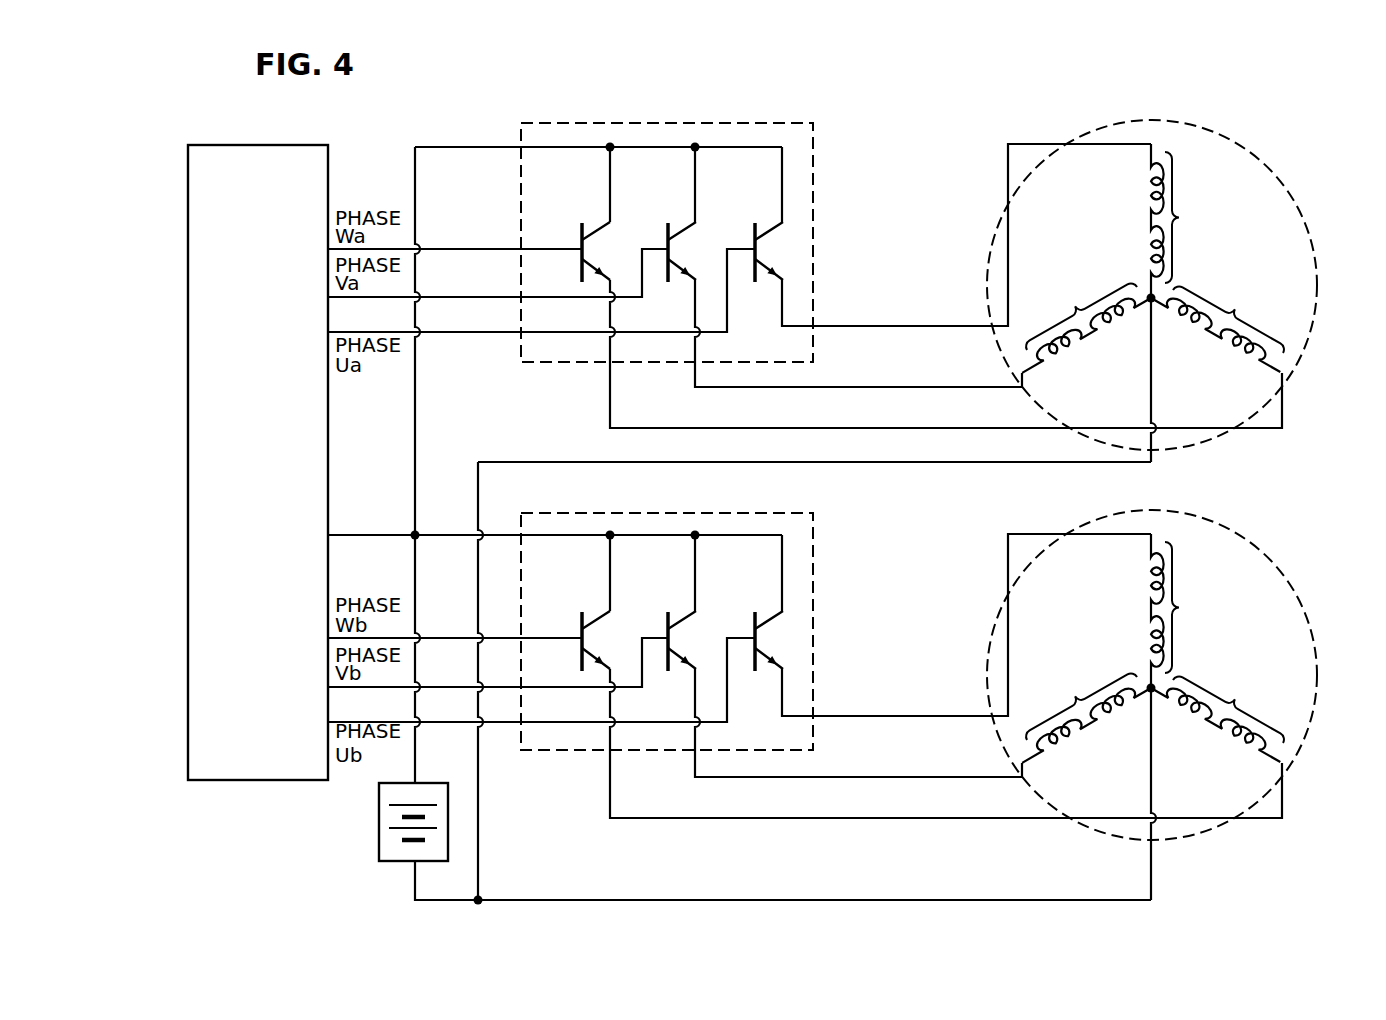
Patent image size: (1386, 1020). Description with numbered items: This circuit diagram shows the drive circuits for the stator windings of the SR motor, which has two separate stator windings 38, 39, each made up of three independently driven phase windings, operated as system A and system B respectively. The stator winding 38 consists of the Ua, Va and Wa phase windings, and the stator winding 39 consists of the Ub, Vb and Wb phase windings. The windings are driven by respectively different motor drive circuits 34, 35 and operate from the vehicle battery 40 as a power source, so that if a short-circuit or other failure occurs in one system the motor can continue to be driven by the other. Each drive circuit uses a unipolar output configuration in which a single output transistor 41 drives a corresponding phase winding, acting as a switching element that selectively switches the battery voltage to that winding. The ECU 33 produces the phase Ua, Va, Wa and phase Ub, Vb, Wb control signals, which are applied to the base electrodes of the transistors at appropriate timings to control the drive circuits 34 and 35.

The ECU 33 is at (240, 780).
The motor drive circuit 34 is at (814, 161).
The motor drive circuit 35 is at (814, 551).
The stator winding 38 is at (1285, 188).
The stator winding 39 is at (1285, 578).
The battery 40 is at (379, 842).
The output transistor 41 is at (741, 238).